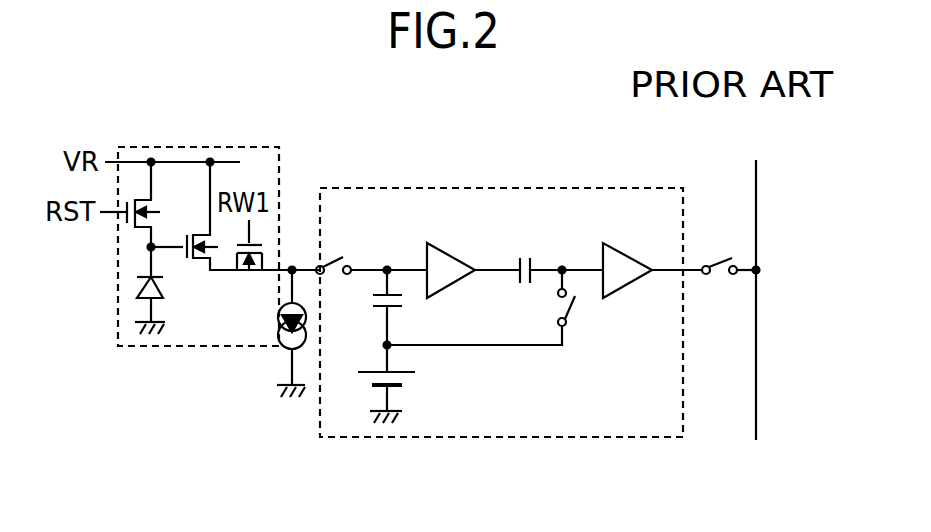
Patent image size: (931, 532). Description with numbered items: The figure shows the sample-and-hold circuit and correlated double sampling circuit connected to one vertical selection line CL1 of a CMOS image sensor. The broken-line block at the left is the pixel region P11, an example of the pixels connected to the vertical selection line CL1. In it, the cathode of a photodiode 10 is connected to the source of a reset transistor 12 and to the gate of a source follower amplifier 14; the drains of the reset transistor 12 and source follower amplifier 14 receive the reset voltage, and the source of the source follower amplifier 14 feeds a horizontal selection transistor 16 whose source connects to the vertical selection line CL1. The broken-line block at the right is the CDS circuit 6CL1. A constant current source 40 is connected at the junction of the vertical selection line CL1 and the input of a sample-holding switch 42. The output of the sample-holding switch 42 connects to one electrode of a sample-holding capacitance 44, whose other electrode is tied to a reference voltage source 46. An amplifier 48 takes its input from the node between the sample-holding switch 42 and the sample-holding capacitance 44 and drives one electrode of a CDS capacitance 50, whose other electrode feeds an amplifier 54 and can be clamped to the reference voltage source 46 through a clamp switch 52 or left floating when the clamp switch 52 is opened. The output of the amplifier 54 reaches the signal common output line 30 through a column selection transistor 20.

The photodiode 10 is at (137, 286).
The reset transistor 12 is at (137, 230).
The source follower amplifier 14 is at (199, 273).
The horizontal selection transistor 16 is at (248, 280).
The column selection transistor 20 is at (725, 257).
The signal common output line 30 is at (757, 210).
The constant current source 40 is at (279, 350).
The sample-holding switch 42 is at (343, 255).
The sample-holding capacitance 44 is at (405, 304).
The reference voltage source 46 is at (408, 382).
The amplifier 48 is at (438, 250).
The CDS capacitance 50 is at (528, 252).
The clamp switch 52 is at (573, 312).
The amplifier 54 is at (622, 252).
The pixel region P11 is at (200, 147).
The vertical selection line CL1 is at (285, 268).
The CDS circuit 6CL1 is at (505, 187).